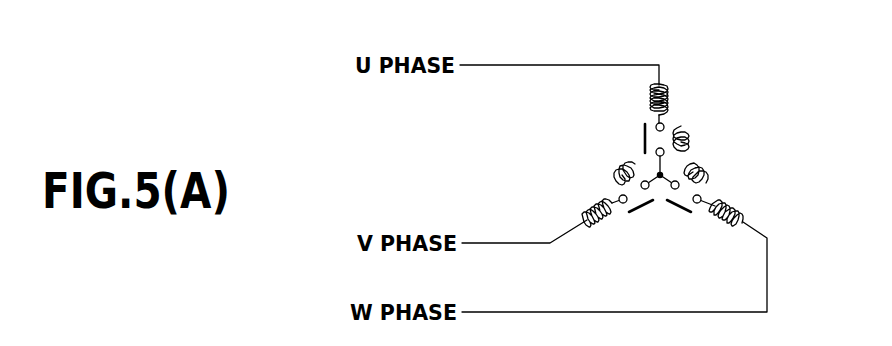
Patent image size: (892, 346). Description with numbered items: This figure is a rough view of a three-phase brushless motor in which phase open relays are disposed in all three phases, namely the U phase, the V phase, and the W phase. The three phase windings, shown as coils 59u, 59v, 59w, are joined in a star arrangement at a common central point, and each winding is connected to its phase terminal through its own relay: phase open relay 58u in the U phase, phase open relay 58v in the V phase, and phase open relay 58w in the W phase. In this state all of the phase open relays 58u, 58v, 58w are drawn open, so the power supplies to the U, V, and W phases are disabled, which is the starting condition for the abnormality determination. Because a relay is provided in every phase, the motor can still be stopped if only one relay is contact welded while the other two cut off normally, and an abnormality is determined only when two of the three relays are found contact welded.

The phase open relay 58u is at (645, 138).
The phase open relay 58v is at (645, 206).
The phase open relay 58w is at (676, 206).
The U-phase coil 59u is at (669, 92).
The V-phase coil 59v is at (595, 202).
The W-phase coil 59w is at (733, 204).